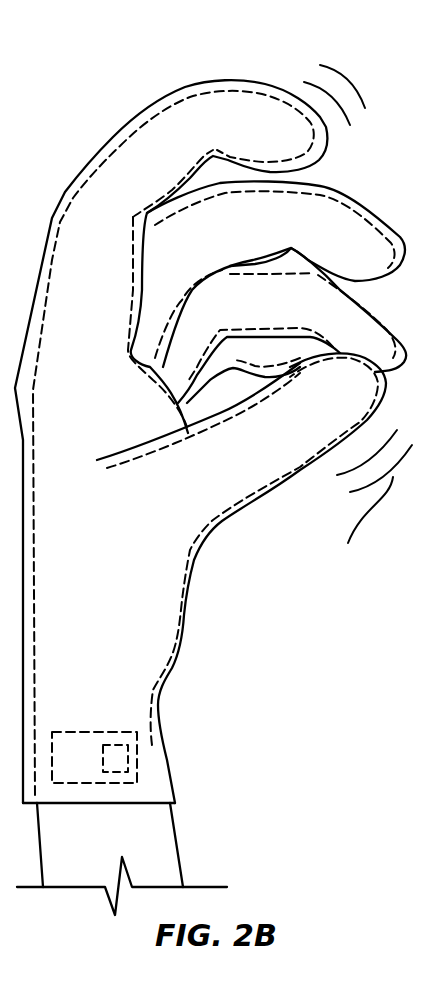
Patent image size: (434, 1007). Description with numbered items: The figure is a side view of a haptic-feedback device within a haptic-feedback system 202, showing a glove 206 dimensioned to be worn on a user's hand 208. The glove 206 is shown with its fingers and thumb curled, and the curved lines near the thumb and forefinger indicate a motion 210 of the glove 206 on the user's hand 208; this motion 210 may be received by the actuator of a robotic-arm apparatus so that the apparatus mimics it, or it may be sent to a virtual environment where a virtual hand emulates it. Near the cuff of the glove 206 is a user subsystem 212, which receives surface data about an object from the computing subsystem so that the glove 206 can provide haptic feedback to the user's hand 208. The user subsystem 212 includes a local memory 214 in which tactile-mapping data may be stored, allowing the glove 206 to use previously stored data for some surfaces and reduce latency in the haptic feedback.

The haptic-feedback system 202 is at (69, 138).
The glove 206 is at (193, 570).
The user's hand 208 is at (183, 612).
The motion 210 is at (373, 500).
The user subsystem 212 is at (137, 748).
The local memory 214 is at (128, 763).